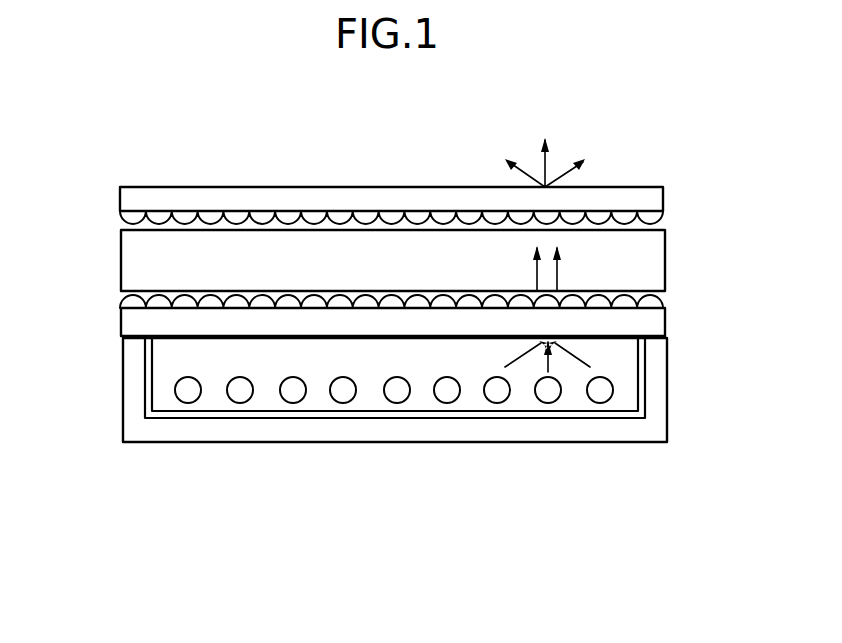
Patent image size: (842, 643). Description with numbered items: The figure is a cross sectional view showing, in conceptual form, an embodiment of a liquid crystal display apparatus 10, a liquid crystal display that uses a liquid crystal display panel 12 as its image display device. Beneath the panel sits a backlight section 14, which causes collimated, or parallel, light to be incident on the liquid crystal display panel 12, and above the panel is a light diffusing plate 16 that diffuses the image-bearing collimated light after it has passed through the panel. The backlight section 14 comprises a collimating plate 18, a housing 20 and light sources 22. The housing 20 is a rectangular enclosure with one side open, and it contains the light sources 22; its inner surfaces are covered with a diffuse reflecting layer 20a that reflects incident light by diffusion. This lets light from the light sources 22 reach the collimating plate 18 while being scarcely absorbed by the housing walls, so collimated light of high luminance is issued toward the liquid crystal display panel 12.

The liquid crystal display apparatus 10 is at (136, 162).
The liquid crystal display panel 12 is at (653, 262).
The backlight section 14 is at (452, 455).
The light diffusing plate 16 is at (617, 193).
The collimating plate 18 is at (653, 315).
The housing 20 is at (577, 427).
The diffuse reflecting layer 20a is at (243, 420).
The light source 22 is at (448, 392).